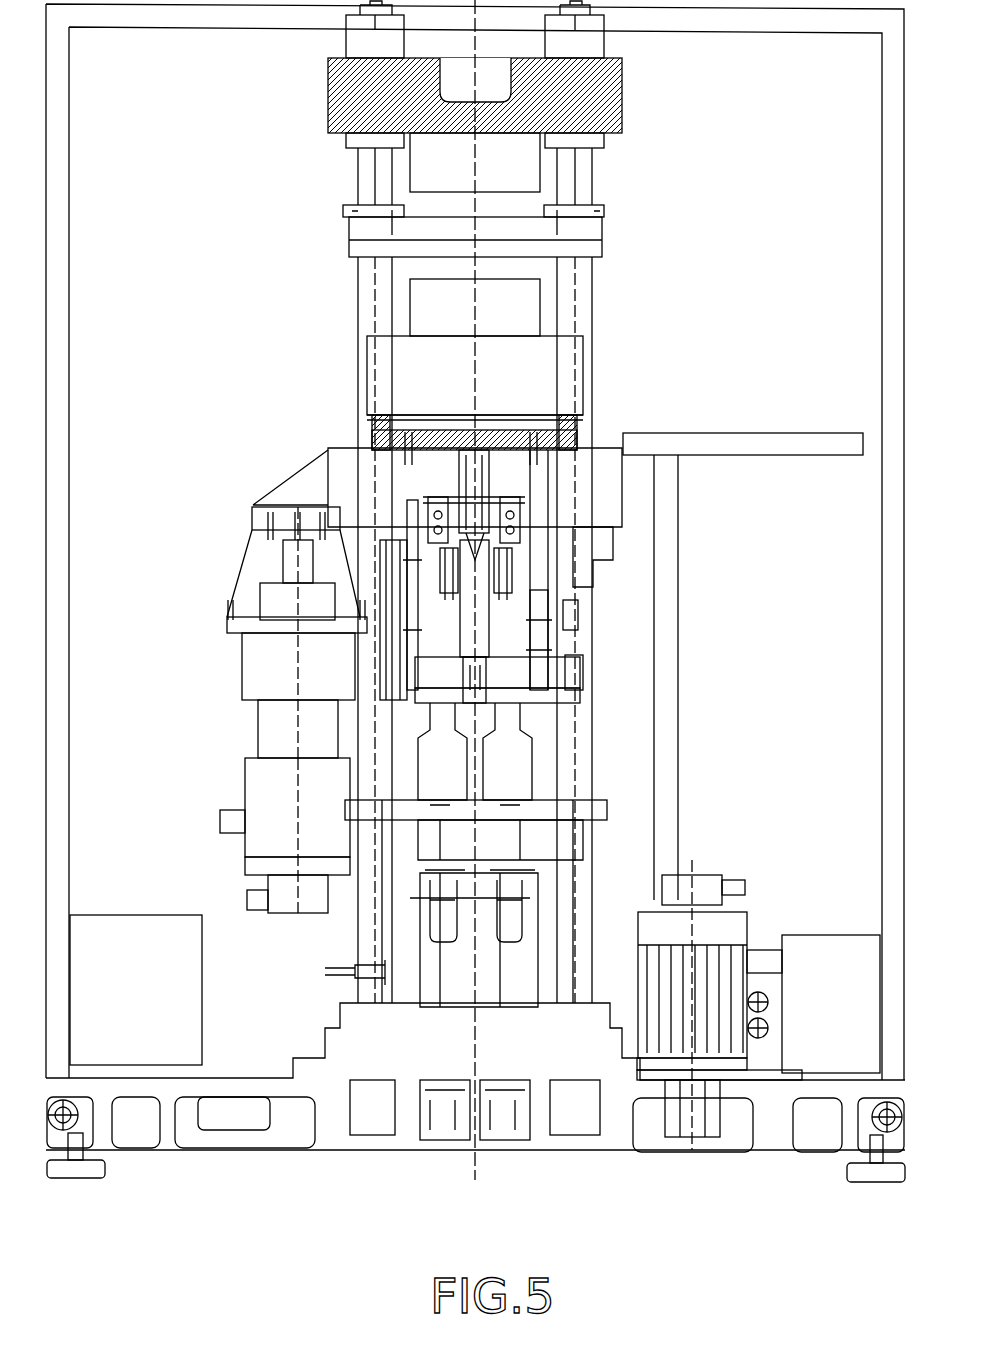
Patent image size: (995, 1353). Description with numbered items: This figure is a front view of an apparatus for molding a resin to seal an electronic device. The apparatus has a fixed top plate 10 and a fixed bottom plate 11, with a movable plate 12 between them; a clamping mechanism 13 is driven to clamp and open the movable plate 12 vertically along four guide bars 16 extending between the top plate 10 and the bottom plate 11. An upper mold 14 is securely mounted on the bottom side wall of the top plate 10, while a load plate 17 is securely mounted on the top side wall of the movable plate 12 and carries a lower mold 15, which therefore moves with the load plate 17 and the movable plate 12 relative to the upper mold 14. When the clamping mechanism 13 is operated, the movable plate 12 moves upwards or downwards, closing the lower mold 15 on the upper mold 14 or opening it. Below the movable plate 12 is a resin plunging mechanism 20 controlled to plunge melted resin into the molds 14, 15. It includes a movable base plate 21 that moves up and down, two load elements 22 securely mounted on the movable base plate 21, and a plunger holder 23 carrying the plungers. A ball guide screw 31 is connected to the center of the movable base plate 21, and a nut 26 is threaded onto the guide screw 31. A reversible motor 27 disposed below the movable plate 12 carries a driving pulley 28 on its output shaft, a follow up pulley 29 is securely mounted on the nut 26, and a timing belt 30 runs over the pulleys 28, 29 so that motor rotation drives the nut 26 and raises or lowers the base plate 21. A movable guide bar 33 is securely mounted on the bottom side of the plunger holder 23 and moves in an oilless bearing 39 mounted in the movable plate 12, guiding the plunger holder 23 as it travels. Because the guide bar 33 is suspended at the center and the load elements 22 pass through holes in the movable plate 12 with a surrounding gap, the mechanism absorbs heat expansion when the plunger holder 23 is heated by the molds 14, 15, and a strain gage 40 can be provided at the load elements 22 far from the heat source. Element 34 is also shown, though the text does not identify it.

The fixed top plate 10 is at (605, 105).
The fixed bottom plate 11 is at (550, 1050).
The movable plate 12 is at (600, 470).
The clamping mechanism 13 is at (520, 760).
The upper mold 14 is at (425, 165).
The lower mold 15 is at (425, 302).
The guide bars 16 is at (583, 300).
The load plate 17 is at (400, 392).
The resin plunging mechanism 20 is at (432, 576).
The movable base plate 21 is at (510, 675).
The load elements 22 is at (540, 542).
The plunger holder 23 is at (520, 432).
The nut 26 is at (555, 587).
The reversible motor 27 is at (255, 795).
The driving pulley 28 is at (330, 570).
The follow up pulley 29 is at (525, 565).
The timing belt 30 is at (360, 593).
The ball guide screw 31 is at (465, 630).
The movable guide bar 33 is at (560, 472).
The bearing 34 is at (555, 515).
The oilless bearing 39 is at (455, 468).
The strain gage 40 is at (555, 612).